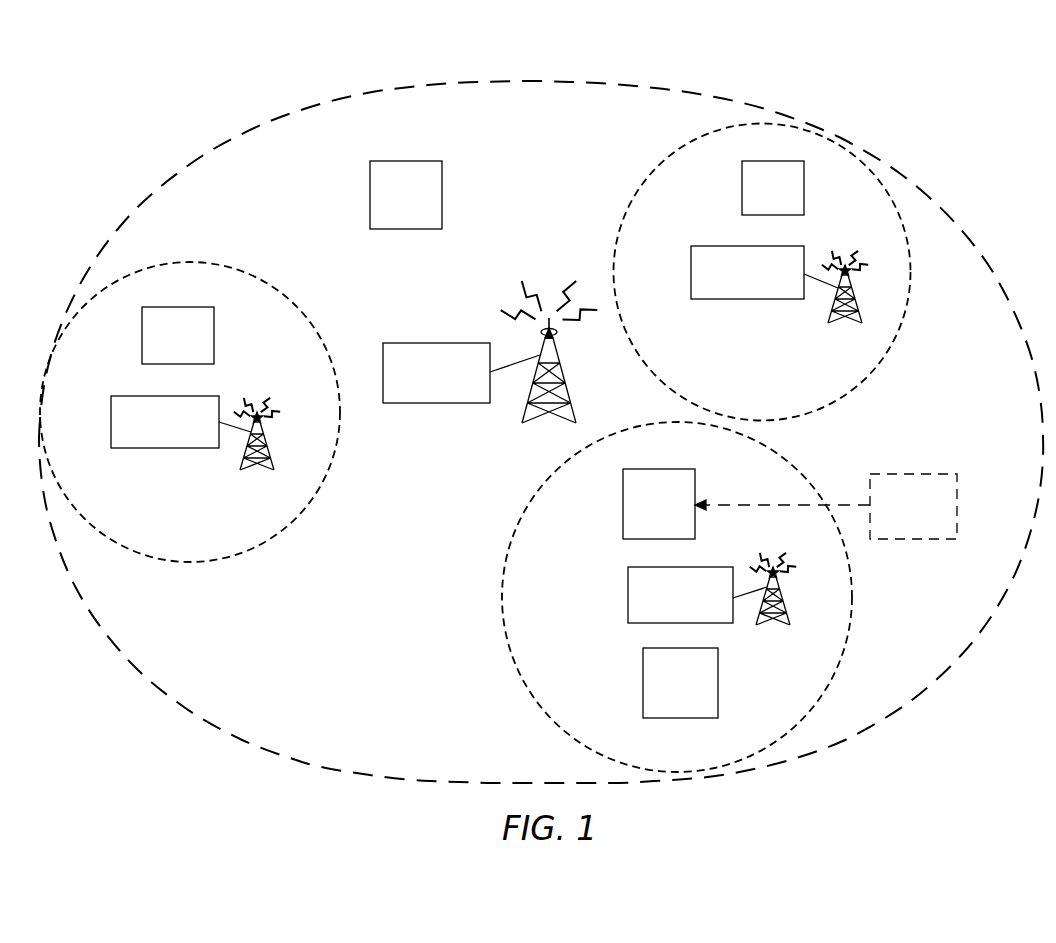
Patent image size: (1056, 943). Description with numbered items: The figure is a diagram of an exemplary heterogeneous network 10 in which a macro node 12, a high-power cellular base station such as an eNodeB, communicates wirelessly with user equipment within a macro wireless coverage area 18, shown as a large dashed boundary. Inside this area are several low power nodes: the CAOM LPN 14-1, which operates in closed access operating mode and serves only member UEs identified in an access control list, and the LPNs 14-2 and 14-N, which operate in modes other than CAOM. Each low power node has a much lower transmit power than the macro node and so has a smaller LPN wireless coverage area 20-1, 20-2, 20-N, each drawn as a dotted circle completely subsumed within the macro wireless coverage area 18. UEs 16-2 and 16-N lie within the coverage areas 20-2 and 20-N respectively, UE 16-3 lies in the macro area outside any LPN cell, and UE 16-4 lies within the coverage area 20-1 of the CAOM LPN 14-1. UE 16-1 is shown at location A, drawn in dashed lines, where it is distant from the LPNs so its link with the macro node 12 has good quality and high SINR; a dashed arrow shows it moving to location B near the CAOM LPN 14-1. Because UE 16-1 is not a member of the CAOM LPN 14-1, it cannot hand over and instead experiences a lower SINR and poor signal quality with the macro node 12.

The heterogeneous network 10 is at (902, 90).
The macro node 12 is at (450, 343).
The CAOM LPN 14-1 is at (628, 593).
The low power node 14-2 is at (133, 448).
The low power node 14-N is at (691, 272).
The user equipment 16-1 is at (623, 500).
The user equipment 16-2 is at (214, 328).
The user equipment 16-3 is at (442, 189).
The user equipment 16-4 is at (718, 680).
The user equipment 16-N is at (804, 188).
The macro wireless coverage area 18 is at (962, 232).
The LPN wireless coverage area 20-1 is at (851, 607).
The LPN wireless coverage area 20-2 is at (267, 290).
The LPN wireless coverage area 20-N is at (907, 302).
The location A is at (937, 470).
The location B is at (668, 466).